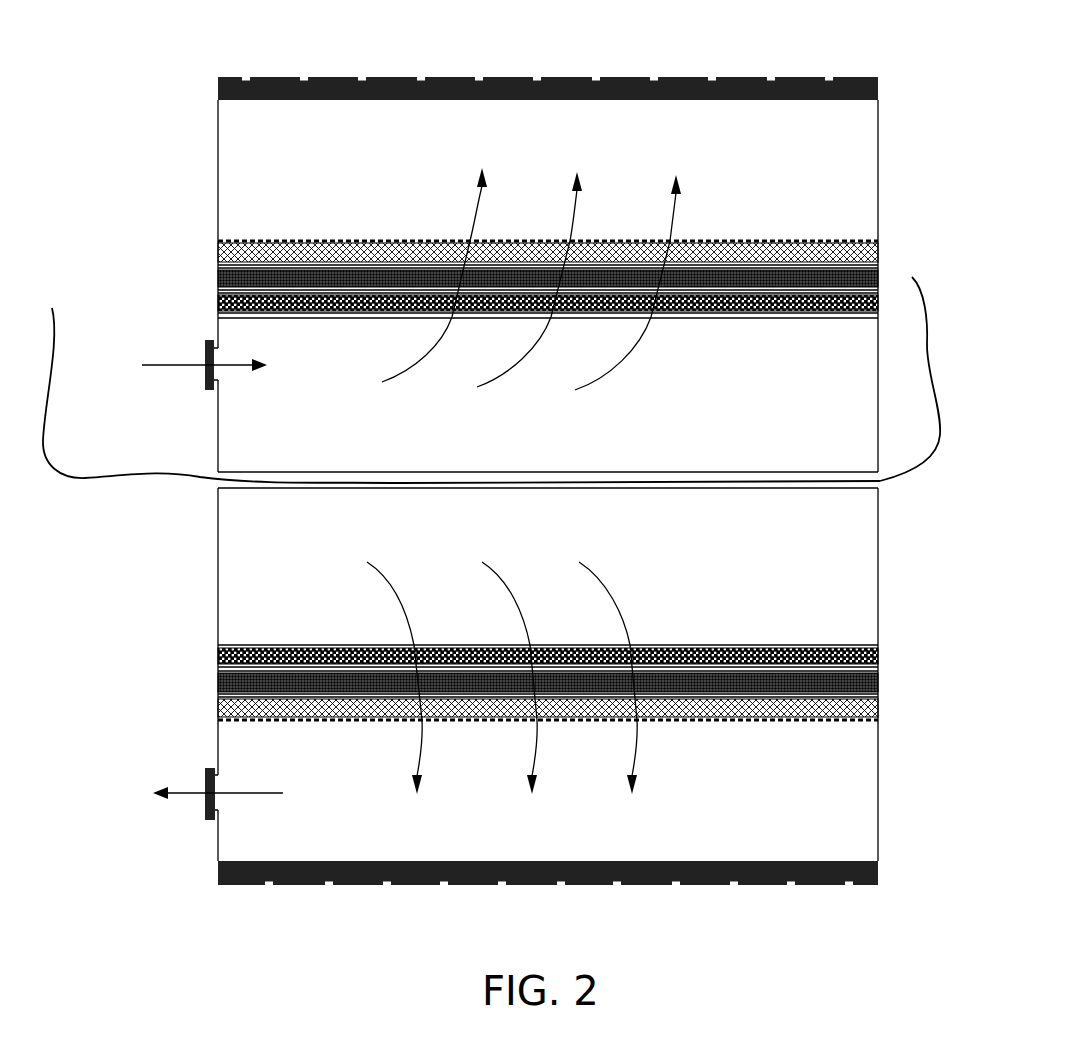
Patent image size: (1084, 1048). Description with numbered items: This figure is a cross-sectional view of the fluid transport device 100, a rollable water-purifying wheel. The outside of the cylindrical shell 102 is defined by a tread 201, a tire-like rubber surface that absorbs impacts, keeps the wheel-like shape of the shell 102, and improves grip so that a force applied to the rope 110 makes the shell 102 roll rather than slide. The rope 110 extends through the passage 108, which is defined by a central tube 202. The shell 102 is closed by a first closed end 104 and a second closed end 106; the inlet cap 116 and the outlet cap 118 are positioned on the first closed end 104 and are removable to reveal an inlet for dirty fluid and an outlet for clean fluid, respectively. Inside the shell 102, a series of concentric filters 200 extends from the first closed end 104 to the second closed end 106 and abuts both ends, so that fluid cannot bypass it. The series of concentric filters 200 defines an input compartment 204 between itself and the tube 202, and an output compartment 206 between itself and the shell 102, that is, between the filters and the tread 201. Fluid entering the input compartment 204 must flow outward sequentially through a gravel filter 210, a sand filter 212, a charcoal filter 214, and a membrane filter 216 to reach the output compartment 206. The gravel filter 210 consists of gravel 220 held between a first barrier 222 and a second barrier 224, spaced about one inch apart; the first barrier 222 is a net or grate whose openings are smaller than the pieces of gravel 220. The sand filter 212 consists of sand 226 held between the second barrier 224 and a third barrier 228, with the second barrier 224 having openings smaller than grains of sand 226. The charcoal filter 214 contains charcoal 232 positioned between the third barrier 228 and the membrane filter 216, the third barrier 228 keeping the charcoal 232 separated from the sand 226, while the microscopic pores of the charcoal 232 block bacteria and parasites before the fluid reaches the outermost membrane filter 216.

The fluid transport device 100 is at (128, 101).
The shell 102 is at (521, 46).
The first closed end 104 is at (218, 207).
The second closed end 106 is at (878, 217).
The passage 108 is at (357, 478).
The rope 110 is at (886, 481).
The inlet cap 116 is at (204, 381).
The outlet cap 118 is at (204, 812).
The series of concentric filters 200 is at (158, 273).
The tread 201 is at (393, 78).
The tube 202 is at (265, 471).
The input compartment 204 is at (863, 398).
The output compartment 206 is at (863, 178).
The gravel filter 210 is at (912, 657).
The sand filter 212 is at (912, 682).
The charcoal filter 214 is at (912, 707).
The membrane filter 216 is at (857, 723).
The gravel 220 is at (232, 657).
The first barrier 222 is at (292, 645).
The second barrier 224 is at (225, 657).
The sand 226 is at (222, 683).
The third barrier 228 is at (278, 697).
The charcoal 232 is at (243, 712).